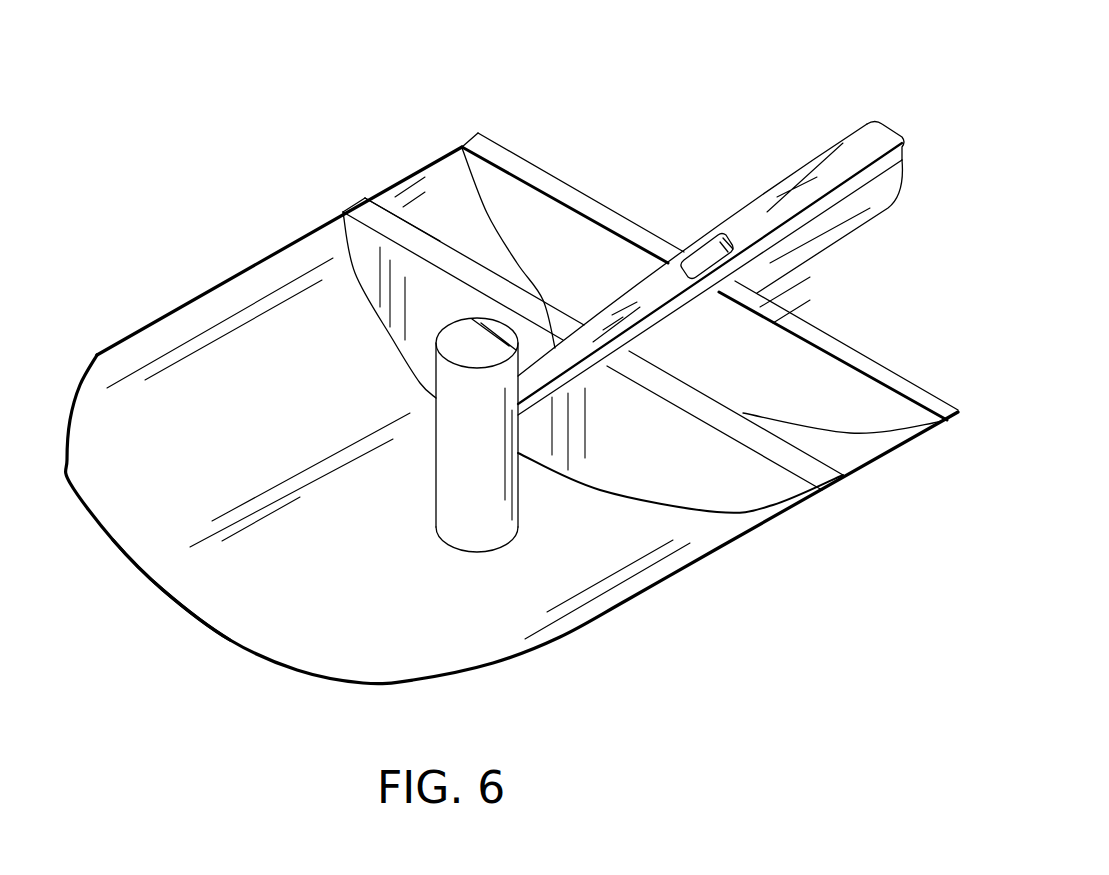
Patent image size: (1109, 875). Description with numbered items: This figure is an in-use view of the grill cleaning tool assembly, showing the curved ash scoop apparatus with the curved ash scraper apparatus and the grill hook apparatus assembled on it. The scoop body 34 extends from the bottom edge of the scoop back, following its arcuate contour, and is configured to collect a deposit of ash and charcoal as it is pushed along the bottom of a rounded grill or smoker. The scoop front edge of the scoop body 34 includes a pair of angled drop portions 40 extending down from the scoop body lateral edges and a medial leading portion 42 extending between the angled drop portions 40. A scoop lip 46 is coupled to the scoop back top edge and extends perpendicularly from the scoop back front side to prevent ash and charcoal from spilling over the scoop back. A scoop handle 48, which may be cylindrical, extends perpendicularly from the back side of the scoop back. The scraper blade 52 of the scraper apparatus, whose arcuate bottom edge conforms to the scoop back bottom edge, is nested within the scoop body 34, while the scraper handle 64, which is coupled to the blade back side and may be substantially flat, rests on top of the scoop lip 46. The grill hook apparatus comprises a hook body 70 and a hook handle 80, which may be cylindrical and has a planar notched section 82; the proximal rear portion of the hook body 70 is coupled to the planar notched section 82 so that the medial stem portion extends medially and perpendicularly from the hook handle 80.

The angled drop portions 40 is at (78, 398).
The medial leading portion 42 is at (180, 608).
The scoop body 34 is at (582, 600).
The scoop lip 46 is at (520, 167).
The scraper blade 52 is at (385, 270).
The planar notched section 82 is at (388, 220).
The hook handle 80 is at (455, 440).
The scraper handle 64 is at (797, 190).
The scoop handle 48 is at (888, 195).
The hook body 70 is at (557, 373).